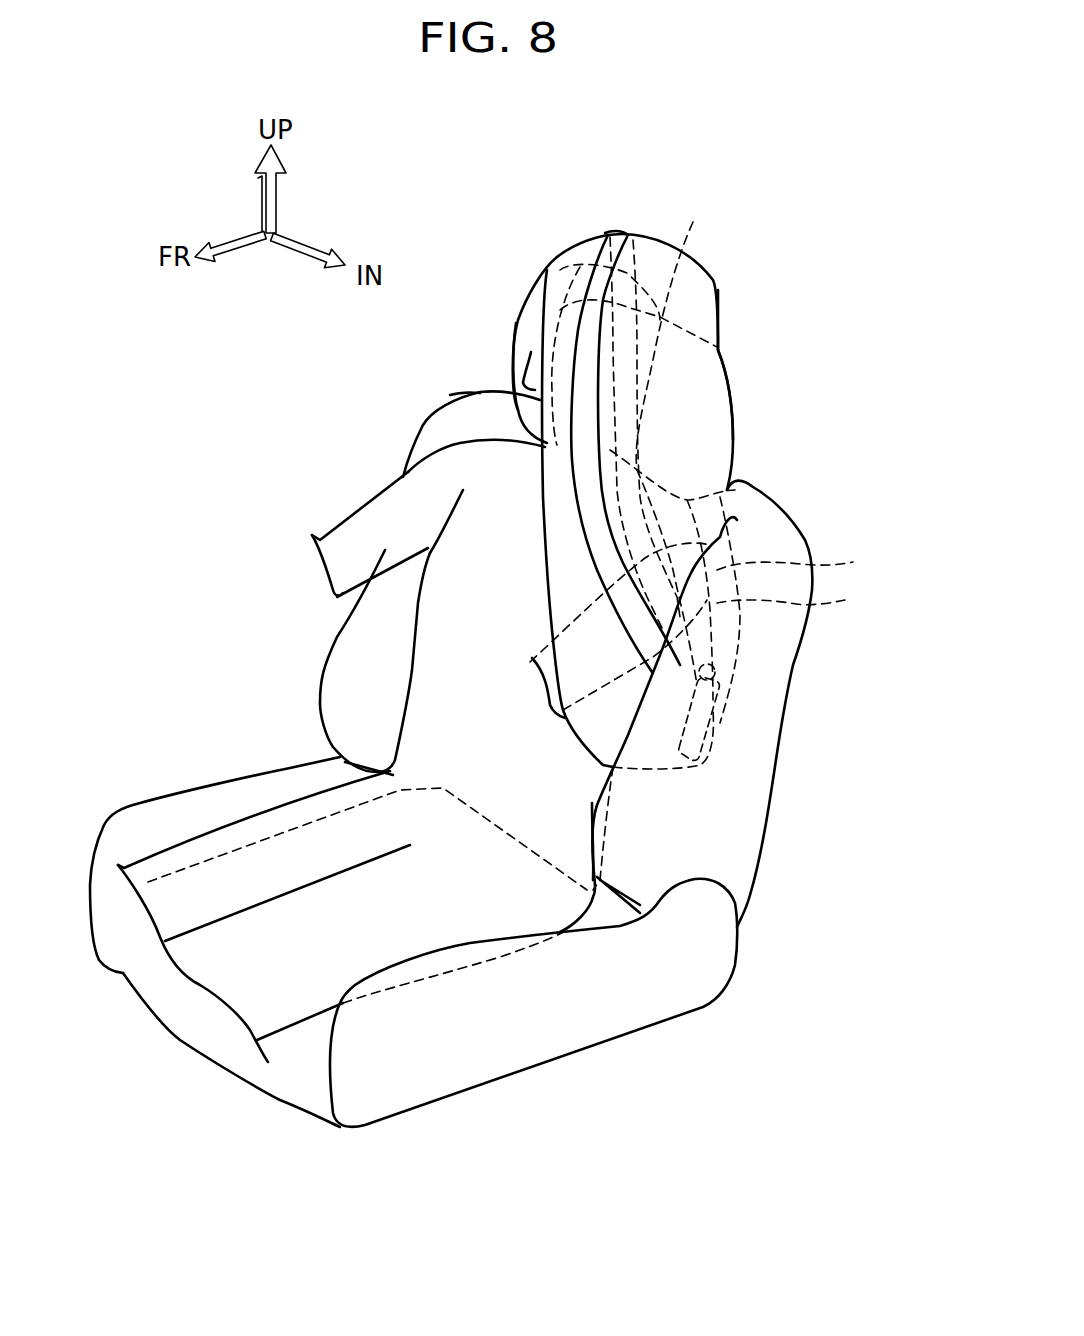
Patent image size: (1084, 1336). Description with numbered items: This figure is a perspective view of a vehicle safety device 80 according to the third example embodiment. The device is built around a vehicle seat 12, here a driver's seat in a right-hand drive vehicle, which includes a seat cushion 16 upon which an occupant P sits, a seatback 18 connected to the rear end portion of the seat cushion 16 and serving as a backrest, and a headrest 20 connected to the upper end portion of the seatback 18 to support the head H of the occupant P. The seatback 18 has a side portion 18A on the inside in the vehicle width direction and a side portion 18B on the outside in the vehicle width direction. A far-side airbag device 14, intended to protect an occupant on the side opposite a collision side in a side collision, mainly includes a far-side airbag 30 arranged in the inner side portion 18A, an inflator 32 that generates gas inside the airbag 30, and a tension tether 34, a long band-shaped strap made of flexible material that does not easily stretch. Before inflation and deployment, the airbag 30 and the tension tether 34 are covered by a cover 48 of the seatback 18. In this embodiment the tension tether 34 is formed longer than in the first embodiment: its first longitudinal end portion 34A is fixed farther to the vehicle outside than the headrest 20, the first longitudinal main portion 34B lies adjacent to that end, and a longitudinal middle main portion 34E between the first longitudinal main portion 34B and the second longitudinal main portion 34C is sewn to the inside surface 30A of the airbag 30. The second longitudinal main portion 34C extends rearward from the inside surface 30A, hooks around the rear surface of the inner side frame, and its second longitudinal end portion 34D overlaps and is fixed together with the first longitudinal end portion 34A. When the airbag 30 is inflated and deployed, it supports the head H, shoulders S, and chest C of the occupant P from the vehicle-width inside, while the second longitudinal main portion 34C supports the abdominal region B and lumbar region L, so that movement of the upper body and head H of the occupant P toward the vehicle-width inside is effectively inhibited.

The vehicle seat 12 is at (605, 1052).
The far-side airbag device 14 is at (738, 272).
The seat cushion 16 is at (488, 1093).
The seatback 18 is at (787, 700).
The seatback inner side portion 18A is at (592, 803).
The seatback outer side portion 18B is at (423, 430).
The headrest 20 is at (730, 373).
The far-side airbag 30 is at (723, 306).
The inside surface of the airbag 30A is at (577, 578).
The inflator 32 is at (697, 755).
The tension tether 34 is at (588, 540).
The first longitudinal end portion 34A is at (625, 440).
The first longitudinal main portion 34B is at (666, 438).
The second longitudinal main portion 34C is at (808, 600).
The second longitudinal end portion 34D is at (610, 477).
The longitudinal middle main portion 34E is at (573, 487).
The cover 48 is at (470, 413).
The vehicle safety device 80 is at (262, 425).
The head H is at (513, 303).
The chest C is at (383, 555).
The shoulders S is at (795, 557).
The occupant P is at (418, 609).
The abdominal region B is at (430, 688).
The lumbar region L is at (393, 753).